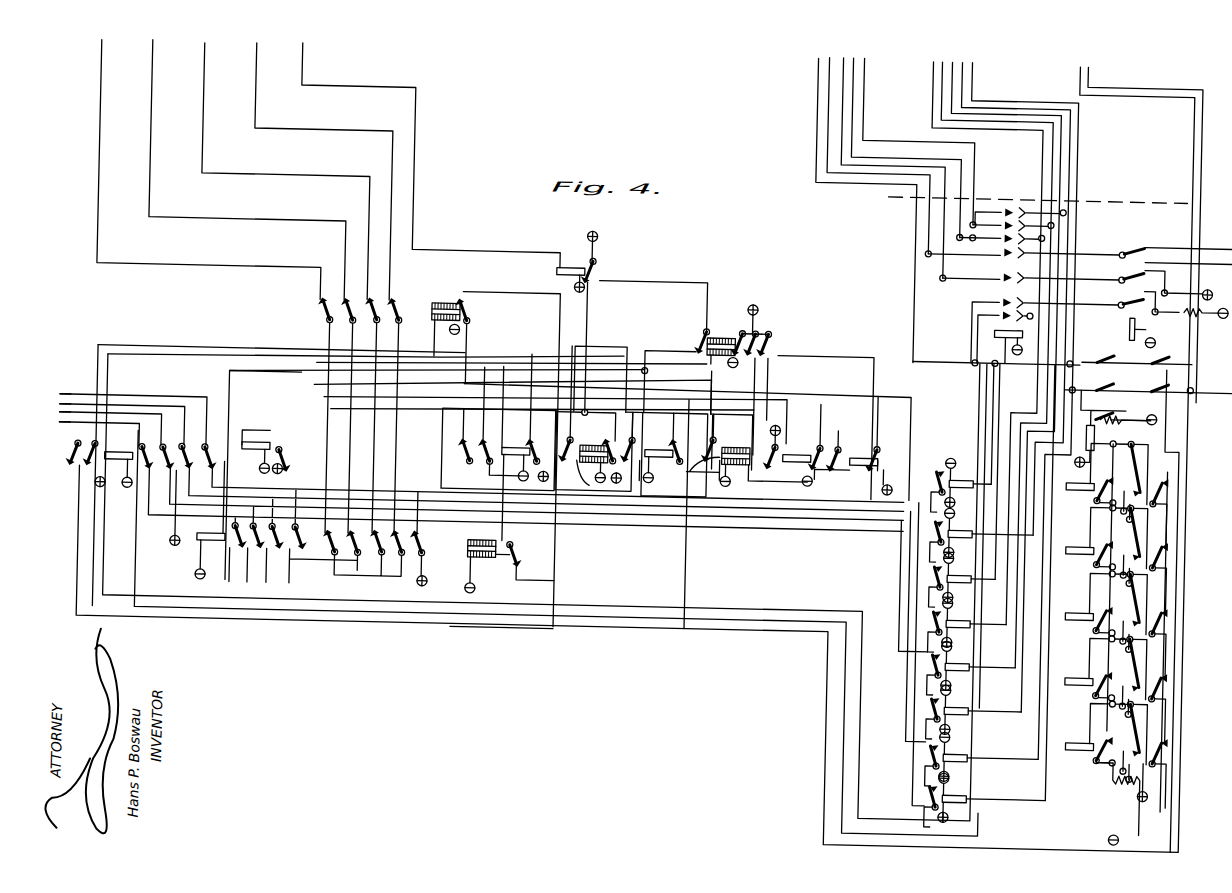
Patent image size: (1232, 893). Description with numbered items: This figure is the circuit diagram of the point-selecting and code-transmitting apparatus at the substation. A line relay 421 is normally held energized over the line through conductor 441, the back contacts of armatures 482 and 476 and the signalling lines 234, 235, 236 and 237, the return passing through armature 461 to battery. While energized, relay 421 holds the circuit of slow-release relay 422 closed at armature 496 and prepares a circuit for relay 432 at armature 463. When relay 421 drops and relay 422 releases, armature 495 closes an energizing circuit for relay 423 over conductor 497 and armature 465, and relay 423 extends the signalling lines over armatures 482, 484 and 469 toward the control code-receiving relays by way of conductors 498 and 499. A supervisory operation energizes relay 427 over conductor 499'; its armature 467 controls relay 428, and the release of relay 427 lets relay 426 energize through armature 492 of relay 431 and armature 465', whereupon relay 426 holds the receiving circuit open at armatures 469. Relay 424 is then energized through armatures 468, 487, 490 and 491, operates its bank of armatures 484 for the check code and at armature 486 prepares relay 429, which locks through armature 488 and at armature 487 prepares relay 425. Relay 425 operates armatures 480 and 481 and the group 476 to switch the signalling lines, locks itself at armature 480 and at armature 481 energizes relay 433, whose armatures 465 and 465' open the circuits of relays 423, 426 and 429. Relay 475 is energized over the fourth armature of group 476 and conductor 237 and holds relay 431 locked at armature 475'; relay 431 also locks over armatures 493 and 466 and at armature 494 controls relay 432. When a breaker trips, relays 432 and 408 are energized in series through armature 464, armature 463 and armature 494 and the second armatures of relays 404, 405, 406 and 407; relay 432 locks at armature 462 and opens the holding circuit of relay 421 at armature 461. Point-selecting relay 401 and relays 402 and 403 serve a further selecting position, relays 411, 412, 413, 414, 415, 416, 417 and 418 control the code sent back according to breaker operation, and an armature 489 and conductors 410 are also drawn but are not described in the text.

The conductor 499 is at (286, 171).
The conductor 498 is at (248, 90).
The conductor 499' is at (431, 155).
The group of armatures 469 is at (388, 305).
The slow-release relay 426 is at (440, 306).
The armature 468 is at (470, 313).
The relay 427 is at (566, 268).
The armature 467 is at (596, 270).
The armature 465' is at (675, 366).
The relay 433 is at (721, 335).
The armature 465 is at (758, 330).
The armature 464 is at (774, 349).
The armature 466 is at (753, 381).
The conductor 441 is at (789, 400).
The cable conductors 410 is at (925, 89).
The relay 402 is at (1134, 323).
The point-selecting relay 401 is at (1001, 332).
The relay 403 is at (1096, 430).
The relay 404 is at (1082, 474).
The relay 405 is at (1078, 536).
The relay 406 is at (1079, 602).
The relay 407 is at (1076, 667).
The relay 408 is at (1075, 732).
The relay 411 is at (961, 485).
The relay 412 is at (982, 536).
The relay 413 is at (962, 580).
The relay 414 is at (967, 626).
The relay 415 is at (971, 669).
The relay 416 is at (974, 713).
The relay 417 is at (982, 760).
The relay 418 is at (985, 801).
The signalling line 237 is at (68, 406).
The signalling line 236 is at (81, 416).
The signalling line 235 is at (118, 424).
The signalling line 234 is at (128, 434).
The group of armatures 476 is at (203, 406).
The conductor 497 is at (249, 379).
The relay 475 is at (256, 444).
The armature 475' is at (293, 459).
The armature 480 is at (62, 448).
The armature 481 is at (85, 488).
The relay 425 is at (116, 471).
The armatures 482 is at (283, 560).
The relay 423 is at (200, 550).
The bank of armatures 484 is at (403, 566).
The slow relay 424 is at (470, 553).
The armature 486 is at (514, 553).
The armature 487 is at (470, 464).
The armature 488 is at (499, 425).
The relay 429 is at (515, 449).
The relay contact 489 is at (541, 444).
The armature 490 is at (583, 421).
The slow-release relay 428 is at (597, 440).
The armature 491 is at (588, 445).
The armature 492 is at (644, 440).
The relay 431 is at (658, 448).
The armature 493 is at (684, 439).
The armature 495 is at (717, 438).
The armature 494 is at (690, 475).
The slow-release relay 422 is at (742, 440).
The line relay 421 is at (797, 450).
The armature 463 is at (823, 437).
The armature 462 is at (840, 452).
The relay 432 is at (846, 470).
The armature 461 is at (882, 450).
The armature 496 is at (797, 486).